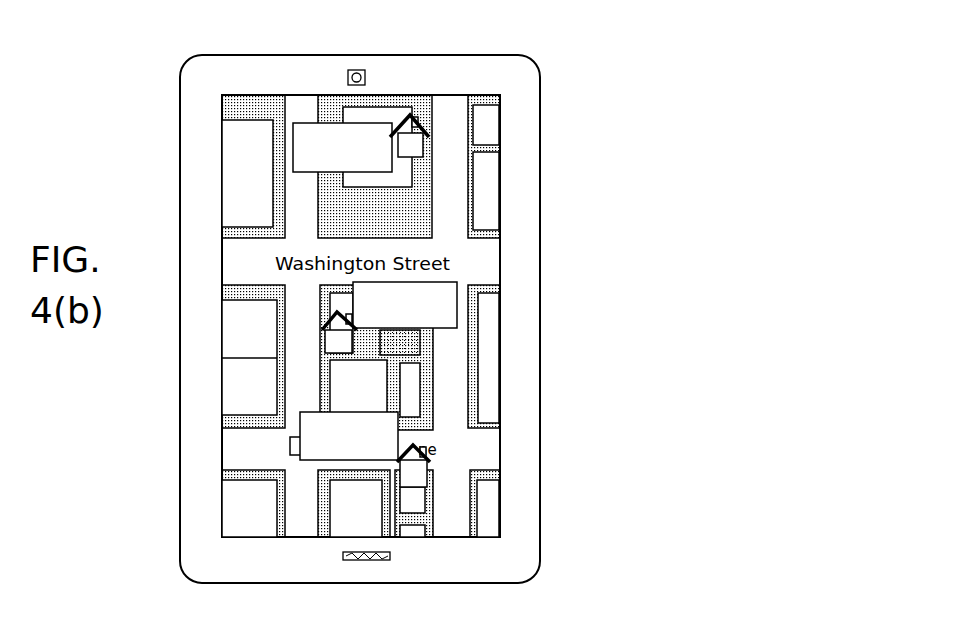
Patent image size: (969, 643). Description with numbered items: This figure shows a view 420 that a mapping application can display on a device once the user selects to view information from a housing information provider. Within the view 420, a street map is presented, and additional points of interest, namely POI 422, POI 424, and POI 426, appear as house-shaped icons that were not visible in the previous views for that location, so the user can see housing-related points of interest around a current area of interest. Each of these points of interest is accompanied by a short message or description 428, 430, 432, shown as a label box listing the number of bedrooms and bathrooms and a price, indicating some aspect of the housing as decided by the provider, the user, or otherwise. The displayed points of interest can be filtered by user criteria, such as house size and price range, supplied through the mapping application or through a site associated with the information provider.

The view 420 is at (662, 97).
The POI 422 is at (410, 115).
The POI 424 is at (432, 462).
The POI 426 is at (322, 330).
The short message or description 428 is at (293, 150).
The short message or description 430 is at (482, 312).
The short message or description 432 is at (290, 437).